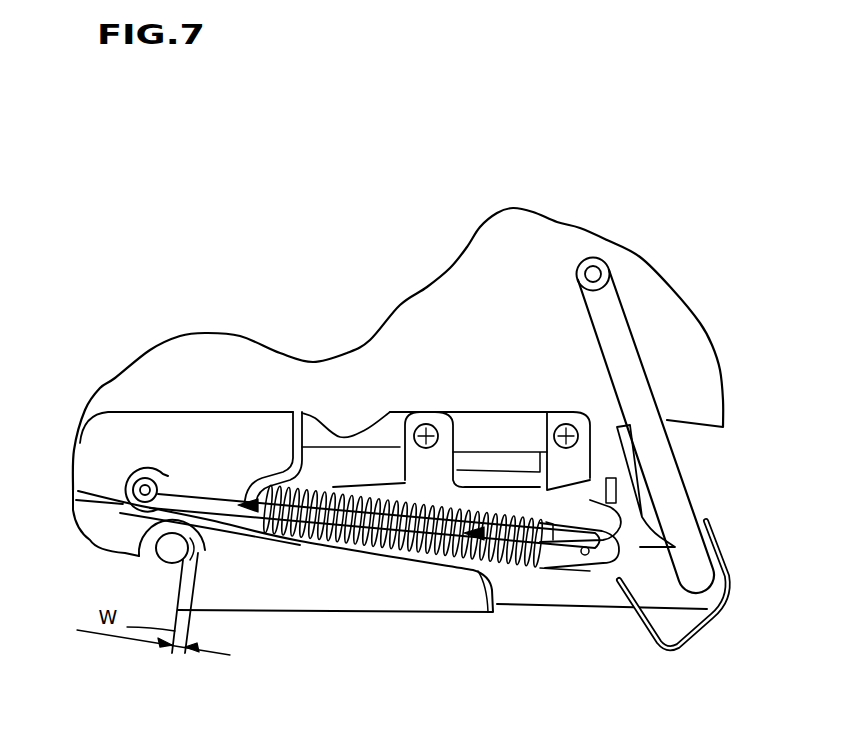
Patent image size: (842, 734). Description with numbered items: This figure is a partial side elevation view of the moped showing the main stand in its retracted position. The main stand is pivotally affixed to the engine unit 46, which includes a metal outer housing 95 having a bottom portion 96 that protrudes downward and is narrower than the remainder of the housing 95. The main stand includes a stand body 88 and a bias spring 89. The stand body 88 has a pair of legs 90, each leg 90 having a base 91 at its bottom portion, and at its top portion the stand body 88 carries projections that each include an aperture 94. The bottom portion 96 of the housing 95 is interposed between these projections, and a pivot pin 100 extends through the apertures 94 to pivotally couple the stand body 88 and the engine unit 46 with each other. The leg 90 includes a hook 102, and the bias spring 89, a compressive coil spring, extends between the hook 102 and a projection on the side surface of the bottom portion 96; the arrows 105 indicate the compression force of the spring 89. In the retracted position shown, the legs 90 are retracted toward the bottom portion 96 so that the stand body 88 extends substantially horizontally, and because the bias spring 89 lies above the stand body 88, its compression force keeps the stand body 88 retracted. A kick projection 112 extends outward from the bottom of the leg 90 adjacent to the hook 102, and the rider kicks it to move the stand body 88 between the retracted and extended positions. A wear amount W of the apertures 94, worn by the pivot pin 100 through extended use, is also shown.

The engine unit 46 is at (719, 355).
The outer housing 95 is at (512, 338).
The bottom portion 96 is at (103, 532).
The pivot pin 100 is at (165, 550).
The aperture 94 is at (187, 547).
The arrows 105 is at (205, 497).
The bias spring 89 is at (327, 498).
The stand body 88 is at (427, 603).
The leg 90 is at (604, 600).
The hook 102 is at (578, 553).
The kick projection 112 is at (617, 327).
The base 91 is at (683, 635).